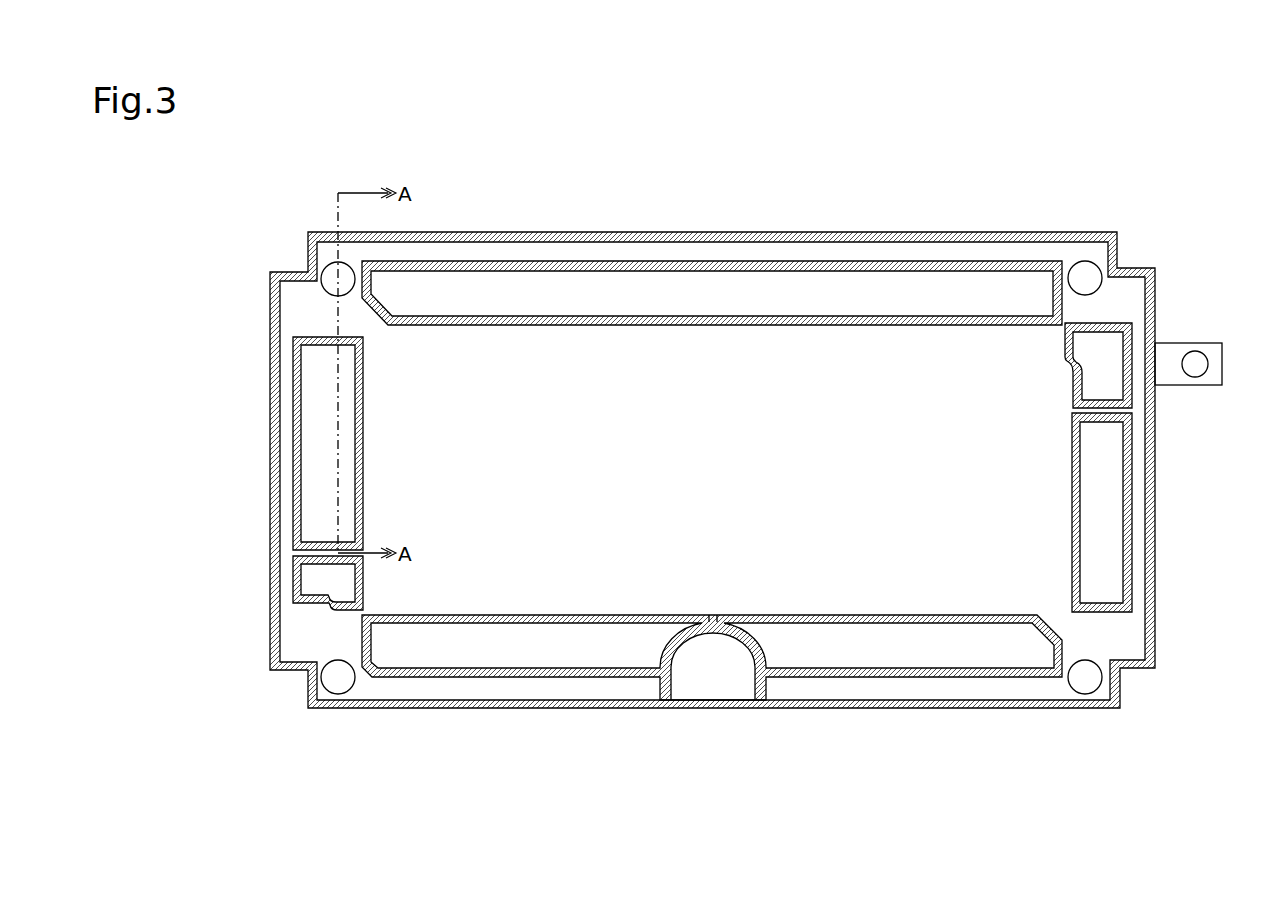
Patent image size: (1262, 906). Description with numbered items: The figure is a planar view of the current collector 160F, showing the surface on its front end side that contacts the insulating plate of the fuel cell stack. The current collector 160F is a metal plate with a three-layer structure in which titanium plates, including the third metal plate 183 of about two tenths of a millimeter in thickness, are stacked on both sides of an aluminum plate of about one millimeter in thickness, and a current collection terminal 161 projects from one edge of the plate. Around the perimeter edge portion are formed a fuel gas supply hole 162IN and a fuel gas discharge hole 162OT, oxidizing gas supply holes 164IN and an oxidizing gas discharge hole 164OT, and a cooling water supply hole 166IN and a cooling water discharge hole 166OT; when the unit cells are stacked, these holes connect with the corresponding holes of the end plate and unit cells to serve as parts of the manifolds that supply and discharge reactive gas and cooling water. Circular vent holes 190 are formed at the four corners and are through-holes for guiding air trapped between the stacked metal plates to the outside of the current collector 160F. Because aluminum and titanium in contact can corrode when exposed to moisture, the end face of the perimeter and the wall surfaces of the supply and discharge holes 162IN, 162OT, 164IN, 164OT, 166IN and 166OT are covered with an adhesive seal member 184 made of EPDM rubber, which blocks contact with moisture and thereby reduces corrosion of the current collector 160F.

The current collector 160F is at (712, 428).
The current collection terminal 161 is at (1173, 378).
The fuel gas supply hole 162IN is at (1110, 353).
The fuel gas discharge hole 162OT is at (312, 581).
The oxidizing gas supply holes 164IN is at (805, 650).
The oxidizing gas discharge hole 164OT is at (922, 293).
The cooling water supply hole 166IN is at (1112, 528).
The cooling water discharge hole 166OT is at (312, 421).
The third metal plate 183 is at (810, 250).
The adhesive seal member 184 is at (711, 482).
The vent holes 190 is at (331, 273).